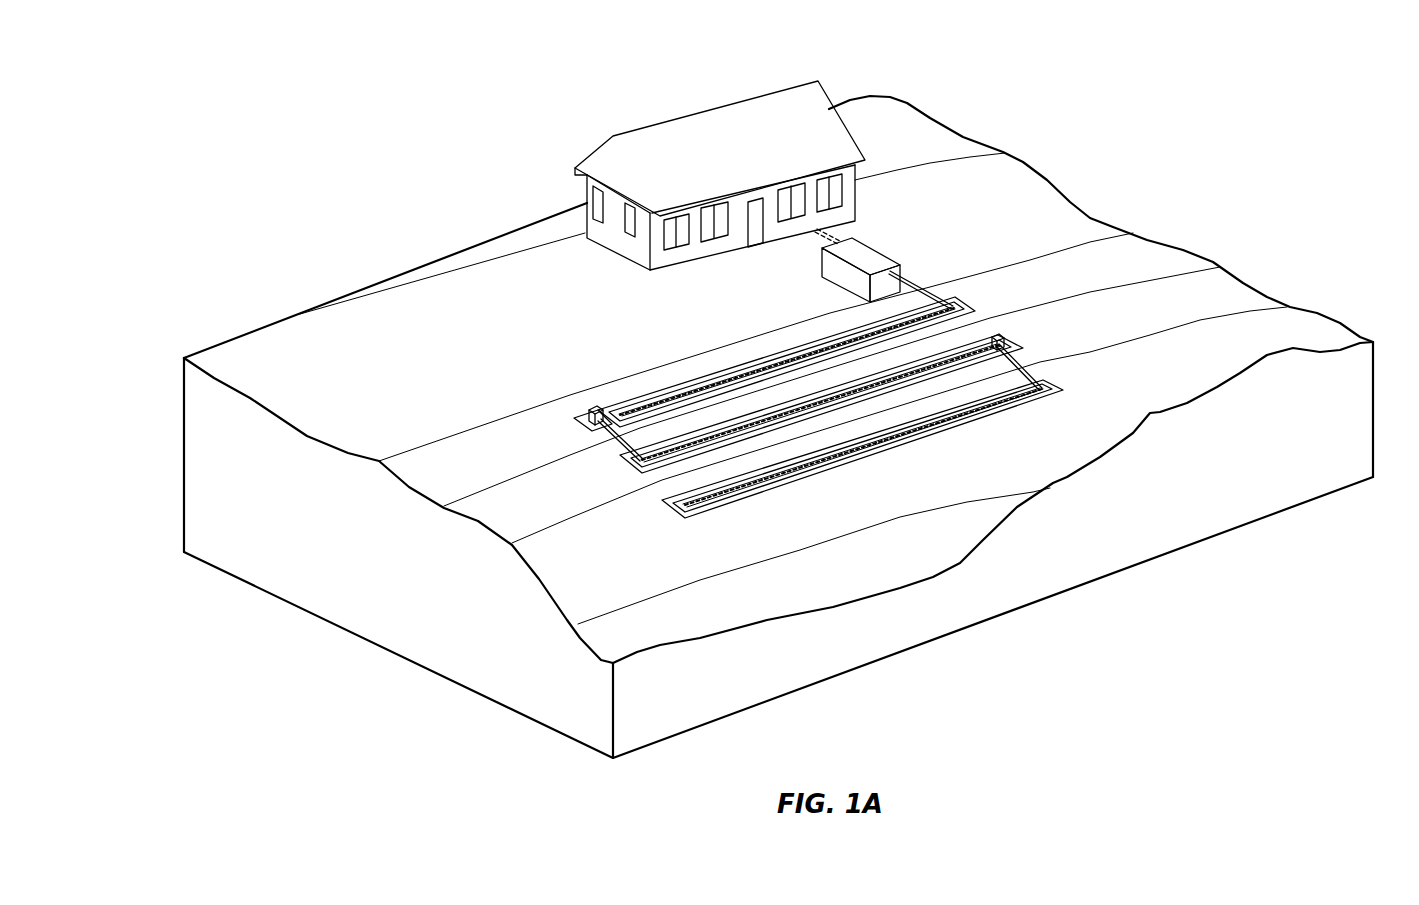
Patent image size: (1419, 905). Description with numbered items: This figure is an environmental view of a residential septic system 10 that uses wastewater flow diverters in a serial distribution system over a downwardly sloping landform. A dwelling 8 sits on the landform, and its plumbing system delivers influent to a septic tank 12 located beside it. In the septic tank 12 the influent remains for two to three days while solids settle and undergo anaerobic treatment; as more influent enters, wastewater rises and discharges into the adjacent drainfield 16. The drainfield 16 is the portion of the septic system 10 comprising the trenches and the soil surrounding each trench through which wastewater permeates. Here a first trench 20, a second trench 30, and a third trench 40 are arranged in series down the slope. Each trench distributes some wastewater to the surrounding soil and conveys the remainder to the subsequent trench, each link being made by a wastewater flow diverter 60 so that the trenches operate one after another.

The dwelling 8 is at (860, 122).
The septic system 10 is at (1095, 168).
The septic tank 12 is at (892, 262).
The drainfield 16 is at (640, 324).
The first trench 20 is at (975, 302).
The second trench 30 is at (1033, 333).
The third trench 40 is at (1073, 380).
The wastewater flow diverter 60 is at (590, 417).